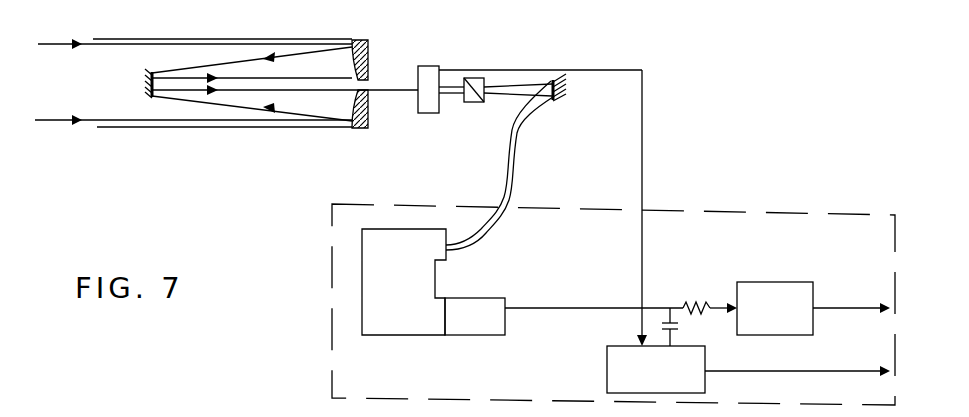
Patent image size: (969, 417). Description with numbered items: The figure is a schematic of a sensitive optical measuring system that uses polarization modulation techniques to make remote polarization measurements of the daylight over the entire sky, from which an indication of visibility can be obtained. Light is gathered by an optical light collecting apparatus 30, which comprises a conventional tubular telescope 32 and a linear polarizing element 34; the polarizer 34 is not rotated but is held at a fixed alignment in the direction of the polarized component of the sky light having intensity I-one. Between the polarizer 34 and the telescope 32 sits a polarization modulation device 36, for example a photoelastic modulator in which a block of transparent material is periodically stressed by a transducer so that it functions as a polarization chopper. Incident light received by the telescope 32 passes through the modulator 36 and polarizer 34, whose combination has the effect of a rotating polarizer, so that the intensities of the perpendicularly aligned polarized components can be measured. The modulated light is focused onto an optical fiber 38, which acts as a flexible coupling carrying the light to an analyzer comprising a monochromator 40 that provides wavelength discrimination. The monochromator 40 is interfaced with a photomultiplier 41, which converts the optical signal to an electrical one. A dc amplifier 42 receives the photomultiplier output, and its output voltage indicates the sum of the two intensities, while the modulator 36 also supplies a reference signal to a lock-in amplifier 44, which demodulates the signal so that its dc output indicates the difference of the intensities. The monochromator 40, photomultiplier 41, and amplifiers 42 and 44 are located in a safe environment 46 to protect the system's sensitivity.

The optical light collecting apparatus 30 is at (208, 142).
The tubular telescope 32 is at (186, 39).
The linear polarizing element 34 is at (472, 102).
The polarization modulation device 36 is at (430, 113).
The optical fiber 38 is at (513, 170).
The monochromator 40 is at (390, 340).
The photomultiplier 41 is at (467, 340).
The dc amplifier 42 is at (770, 282).
The lock-in amplifier 44 is at (607, 374).
The safe environment 46 is at (331, 265).